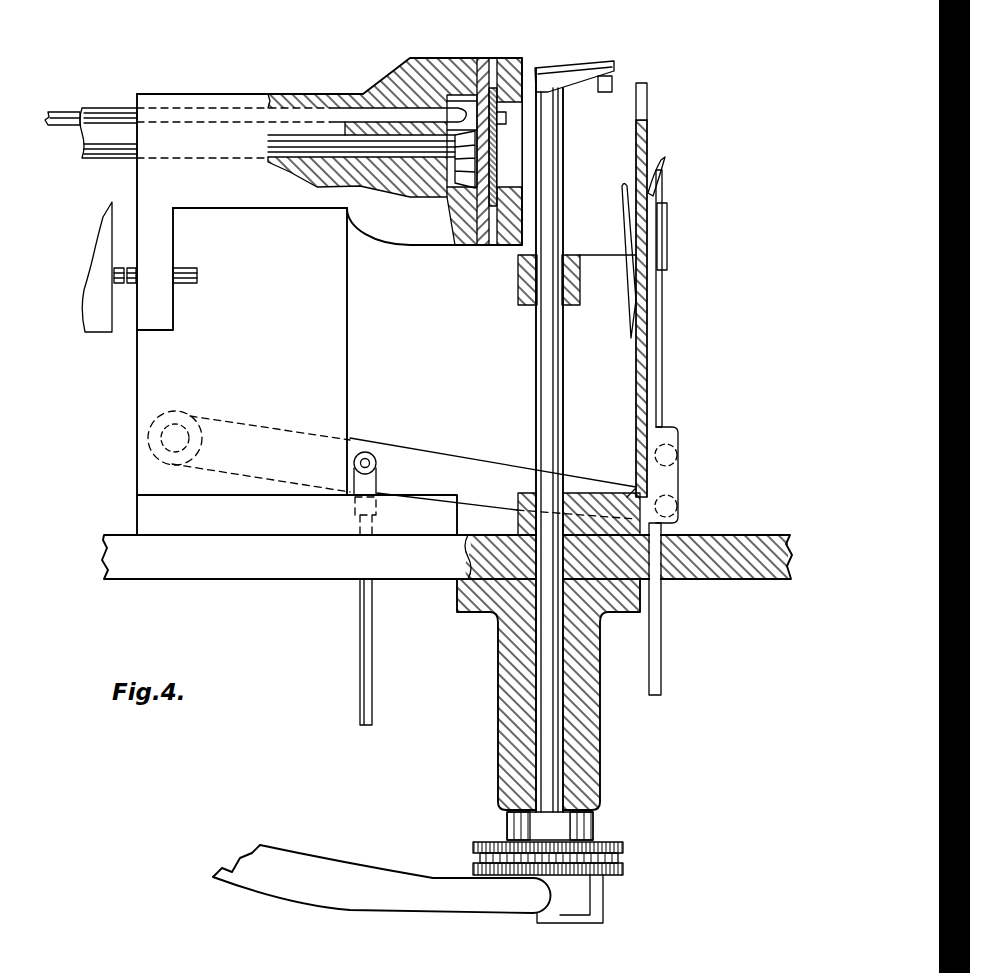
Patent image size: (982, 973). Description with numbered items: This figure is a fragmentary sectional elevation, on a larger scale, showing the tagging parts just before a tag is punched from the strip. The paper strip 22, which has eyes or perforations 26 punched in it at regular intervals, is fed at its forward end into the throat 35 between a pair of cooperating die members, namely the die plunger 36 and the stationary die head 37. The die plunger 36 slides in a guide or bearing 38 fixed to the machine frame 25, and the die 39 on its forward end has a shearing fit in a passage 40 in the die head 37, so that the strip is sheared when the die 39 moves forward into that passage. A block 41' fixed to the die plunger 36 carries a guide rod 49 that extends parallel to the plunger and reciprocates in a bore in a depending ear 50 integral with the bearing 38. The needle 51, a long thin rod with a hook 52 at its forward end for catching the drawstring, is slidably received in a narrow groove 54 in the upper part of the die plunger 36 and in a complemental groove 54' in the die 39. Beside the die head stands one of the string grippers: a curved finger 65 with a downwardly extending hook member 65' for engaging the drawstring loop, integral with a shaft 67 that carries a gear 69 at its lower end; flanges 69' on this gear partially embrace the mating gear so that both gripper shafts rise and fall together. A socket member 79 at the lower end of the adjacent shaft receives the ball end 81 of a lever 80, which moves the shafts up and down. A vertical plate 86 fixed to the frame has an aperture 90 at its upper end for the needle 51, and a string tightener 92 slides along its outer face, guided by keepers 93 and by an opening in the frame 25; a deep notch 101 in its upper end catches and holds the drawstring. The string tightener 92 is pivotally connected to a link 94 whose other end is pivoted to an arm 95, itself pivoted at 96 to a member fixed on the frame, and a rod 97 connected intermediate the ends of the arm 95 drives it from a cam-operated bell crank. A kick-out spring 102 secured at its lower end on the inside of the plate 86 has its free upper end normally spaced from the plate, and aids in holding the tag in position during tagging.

The paper strip 22 is at (498, 158).
The machine frame 25 is at (243, 563).
The eyes or perforations 26 is at (507, 116).
The throat 35 is at (466, 197).
The die plunger 36 is at (100, 146).
The stationary die head 37 is at (514, 208).
The guide or bearing 38 is at (265, 194).
The die 39 is at (466, 178).
The passage 40 is at (512, 174).
The block 41' is at (95, 287).
The guide rod 49 is at (198, 276).
The depending ear 50 is at (163, 310).
The needle 51 is at (70, 100).
The hook 52 is at (476, 108).
The groove 54 is at (301, 88).
The complemental groove 54' is at (501, 137).
The curved finger 65 is at (577, 63).
The hook member 65' is at (642, 69).
The shaft 67 is at (548, 342).
The gear 69 is at (519, 838).
The flanges 69' is at (577, 845).
The socket member 79 is at (605, 899).
The lever 80 is at (402, 902).
The ball end 81 is at (548, 895).
The vertical plate 86 is at (644, 376).
The aperture 90 is at (643, 120).
The string tightener 92 is at (655, 342).
The keepers 93 is at (668, 248).
The link 94 is at (679, 482).
The arm 95 is at (428, 458).
The pivot 96 is at (203, 423).
The rod 97 is at (364, 676).
The deep notch 101 is at (657, 158).
The kick-out spring 102 is at (622, 196).